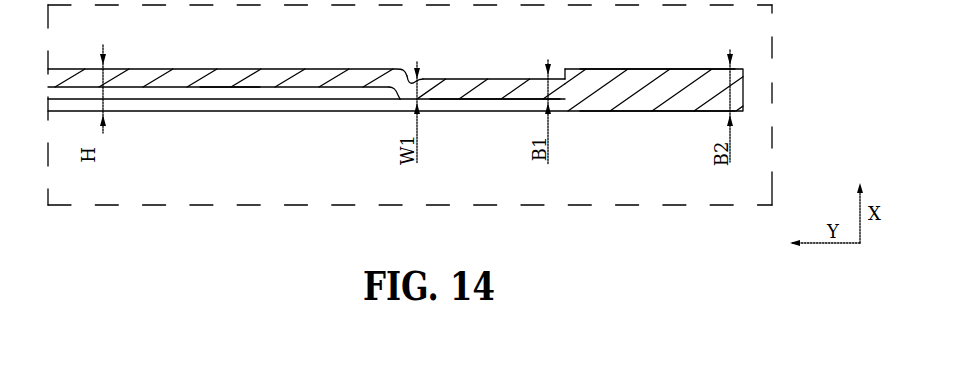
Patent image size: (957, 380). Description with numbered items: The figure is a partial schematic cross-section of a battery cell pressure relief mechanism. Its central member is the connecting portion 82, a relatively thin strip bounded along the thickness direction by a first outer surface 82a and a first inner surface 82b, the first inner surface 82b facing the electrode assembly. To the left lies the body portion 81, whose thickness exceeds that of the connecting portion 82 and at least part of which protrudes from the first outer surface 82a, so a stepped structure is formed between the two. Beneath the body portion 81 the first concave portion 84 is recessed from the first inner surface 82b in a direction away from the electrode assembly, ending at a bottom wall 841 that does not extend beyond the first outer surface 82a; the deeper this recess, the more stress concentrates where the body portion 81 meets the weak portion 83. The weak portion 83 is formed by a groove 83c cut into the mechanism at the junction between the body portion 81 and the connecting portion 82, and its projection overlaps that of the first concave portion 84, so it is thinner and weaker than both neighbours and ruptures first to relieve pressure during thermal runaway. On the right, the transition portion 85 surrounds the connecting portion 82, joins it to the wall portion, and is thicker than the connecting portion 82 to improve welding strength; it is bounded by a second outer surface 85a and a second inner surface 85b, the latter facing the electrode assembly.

The body portion 81 is at (287, 80).
The bottom wall 841 is at (233, 88).
The first concave portion 84 is at (145, 93).
The weak portion 83 is at (418, 101).
The groove 83c is at (425, 62).
The connecting portion 82 is at (568, 111).
The first outer surface 82a is at (483, 78).
The first inner surface 82b is at (484, 101).
The transition portion 85 is at (632, 101).
The second outer surface 85a is at (706, 67).
The second inner surface 85b is at (698, 112).